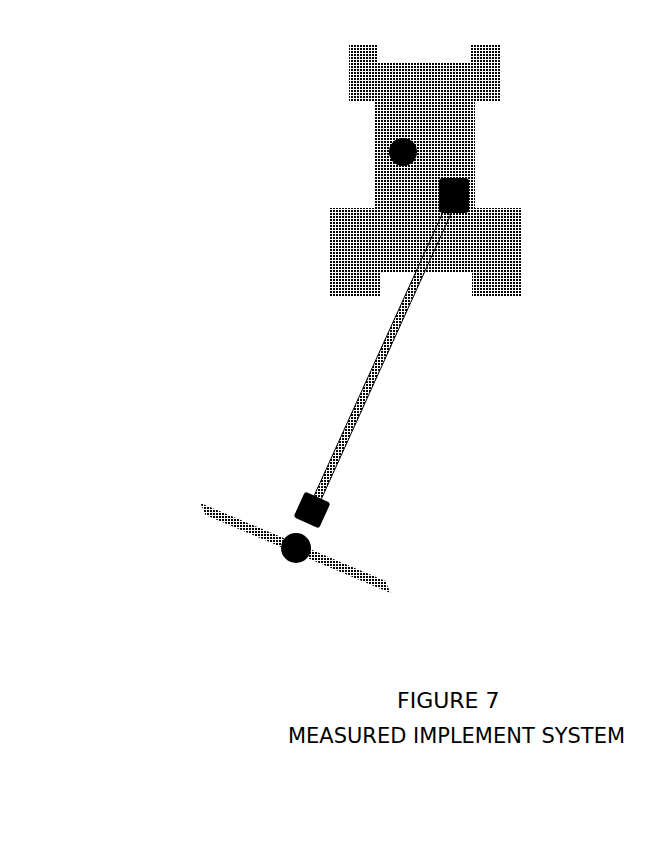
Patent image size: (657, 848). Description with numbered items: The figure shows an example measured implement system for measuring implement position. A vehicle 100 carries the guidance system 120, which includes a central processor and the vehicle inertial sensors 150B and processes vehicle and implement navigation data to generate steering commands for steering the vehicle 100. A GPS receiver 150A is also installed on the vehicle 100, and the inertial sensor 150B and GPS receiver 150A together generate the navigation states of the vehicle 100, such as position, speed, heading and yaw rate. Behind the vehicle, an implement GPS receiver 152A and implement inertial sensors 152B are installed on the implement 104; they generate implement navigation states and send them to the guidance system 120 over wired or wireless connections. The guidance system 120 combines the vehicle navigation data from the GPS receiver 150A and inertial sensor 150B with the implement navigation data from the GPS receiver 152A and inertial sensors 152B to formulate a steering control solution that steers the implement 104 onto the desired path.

The vehicle 100 is at (468, 147).
The guidance system 120 is at (507, 227).
The GPS receiver 150A is at (396, 163).
The vehicle inertial sensors 150B is at (440, 205).
The implement 104 is at (218, 512).
The implement GPS receiver 152A is at (292, 563).
The implement inertial sensors 152B is at (304, 496).